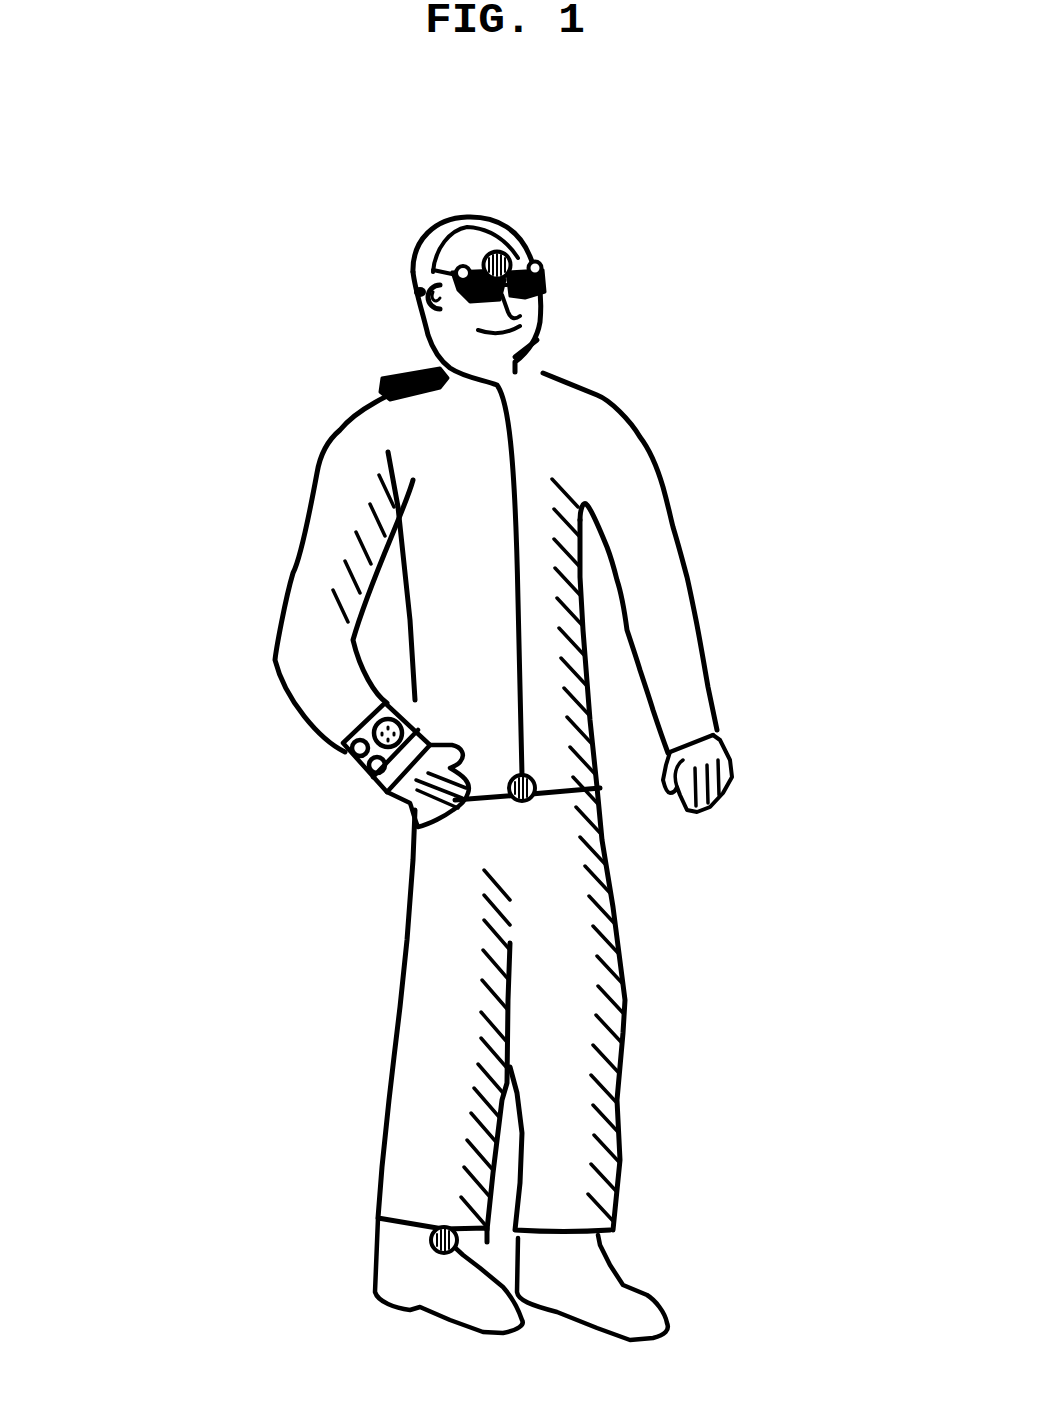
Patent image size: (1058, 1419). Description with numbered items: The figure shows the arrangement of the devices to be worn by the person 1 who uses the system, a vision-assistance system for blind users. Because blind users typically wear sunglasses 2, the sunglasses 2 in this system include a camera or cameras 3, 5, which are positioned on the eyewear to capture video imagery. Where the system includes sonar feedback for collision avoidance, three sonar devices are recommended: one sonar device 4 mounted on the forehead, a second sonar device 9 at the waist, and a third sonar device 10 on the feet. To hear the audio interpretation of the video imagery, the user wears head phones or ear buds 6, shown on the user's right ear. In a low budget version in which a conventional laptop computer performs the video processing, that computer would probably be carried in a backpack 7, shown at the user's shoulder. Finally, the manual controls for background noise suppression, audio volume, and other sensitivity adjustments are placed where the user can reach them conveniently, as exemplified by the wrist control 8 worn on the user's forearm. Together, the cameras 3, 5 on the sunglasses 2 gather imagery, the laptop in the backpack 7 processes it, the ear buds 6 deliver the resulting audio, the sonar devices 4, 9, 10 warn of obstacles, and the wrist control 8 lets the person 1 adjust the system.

The person 1 is at (720, 692).
The sunglasses 2 is at (548, 290).
The camera 3 is at (553, 270).
The sonar device 4 is at (527, 243).
The camera 5 is at (445, 268).
The head phones or ear buds 6 is at (425, 305).
The backpack 7 is at (378, 380).
The wrist control 8 is at (354, 769).
The sonar device 9 is at (505, 797).
The sonar device 10 is at (429, 1240).